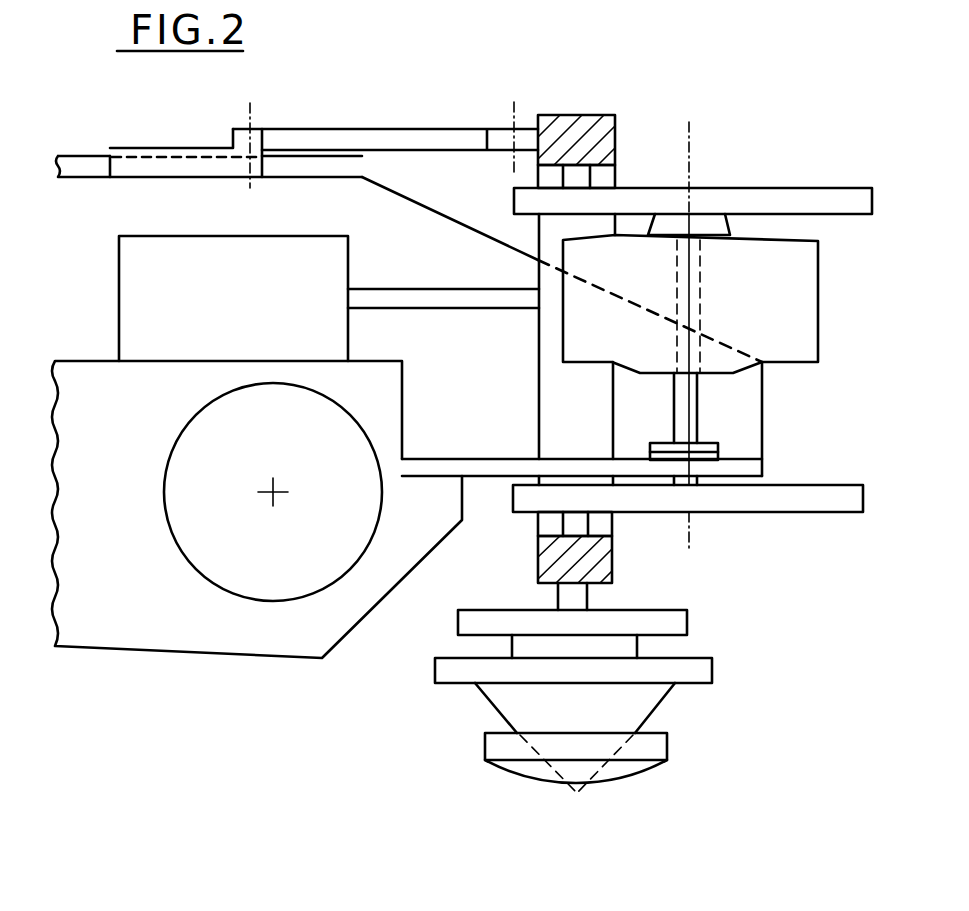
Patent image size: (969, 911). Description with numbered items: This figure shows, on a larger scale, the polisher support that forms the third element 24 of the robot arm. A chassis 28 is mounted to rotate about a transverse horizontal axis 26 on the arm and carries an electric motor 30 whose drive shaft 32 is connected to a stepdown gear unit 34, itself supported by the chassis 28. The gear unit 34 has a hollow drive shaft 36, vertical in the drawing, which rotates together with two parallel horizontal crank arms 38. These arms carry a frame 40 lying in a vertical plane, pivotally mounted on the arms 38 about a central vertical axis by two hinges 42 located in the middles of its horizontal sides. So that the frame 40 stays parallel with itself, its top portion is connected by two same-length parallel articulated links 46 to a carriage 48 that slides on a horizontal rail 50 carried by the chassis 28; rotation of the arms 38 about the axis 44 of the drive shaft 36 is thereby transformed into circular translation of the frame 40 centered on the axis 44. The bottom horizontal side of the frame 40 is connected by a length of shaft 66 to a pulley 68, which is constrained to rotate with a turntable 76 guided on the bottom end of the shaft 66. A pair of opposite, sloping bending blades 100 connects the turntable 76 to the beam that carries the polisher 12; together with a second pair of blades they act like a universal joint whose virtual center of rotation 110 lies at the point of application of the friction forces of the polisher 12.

The polisher 12 is at (667, 745).
The third element 24 is at (522, 82).
The transverse horizontal axis 26 is at (283, 492).
The chassis 28 is at (208, 658).
The electric motor 30 is at (225, 236).
The drive shaft 32 is at (418, 288).
The stepdown gear unit 34 is at (818, 305).
The hollow drive shaft 36 is at (690, 213).
The crank arms 38 is at (800, 189).
The frame 40 is at (617, 126).
The hinges 42 is at (592, 182).
The axis of the drive shaft 44 is at (692, 141).
The articulated links 46 is at (413, 129).
The carriage 48 is at (176, 148).
The horizontal rail 50 is at (82, 152).
The length of shaft 66 is at (587, 598).
The pulley 68 is at (686, 622).
The turntable 76 is at (713, 667).
The bending blades 100 is at (496, 711).
The center of rotation 110 is at (572, 798).